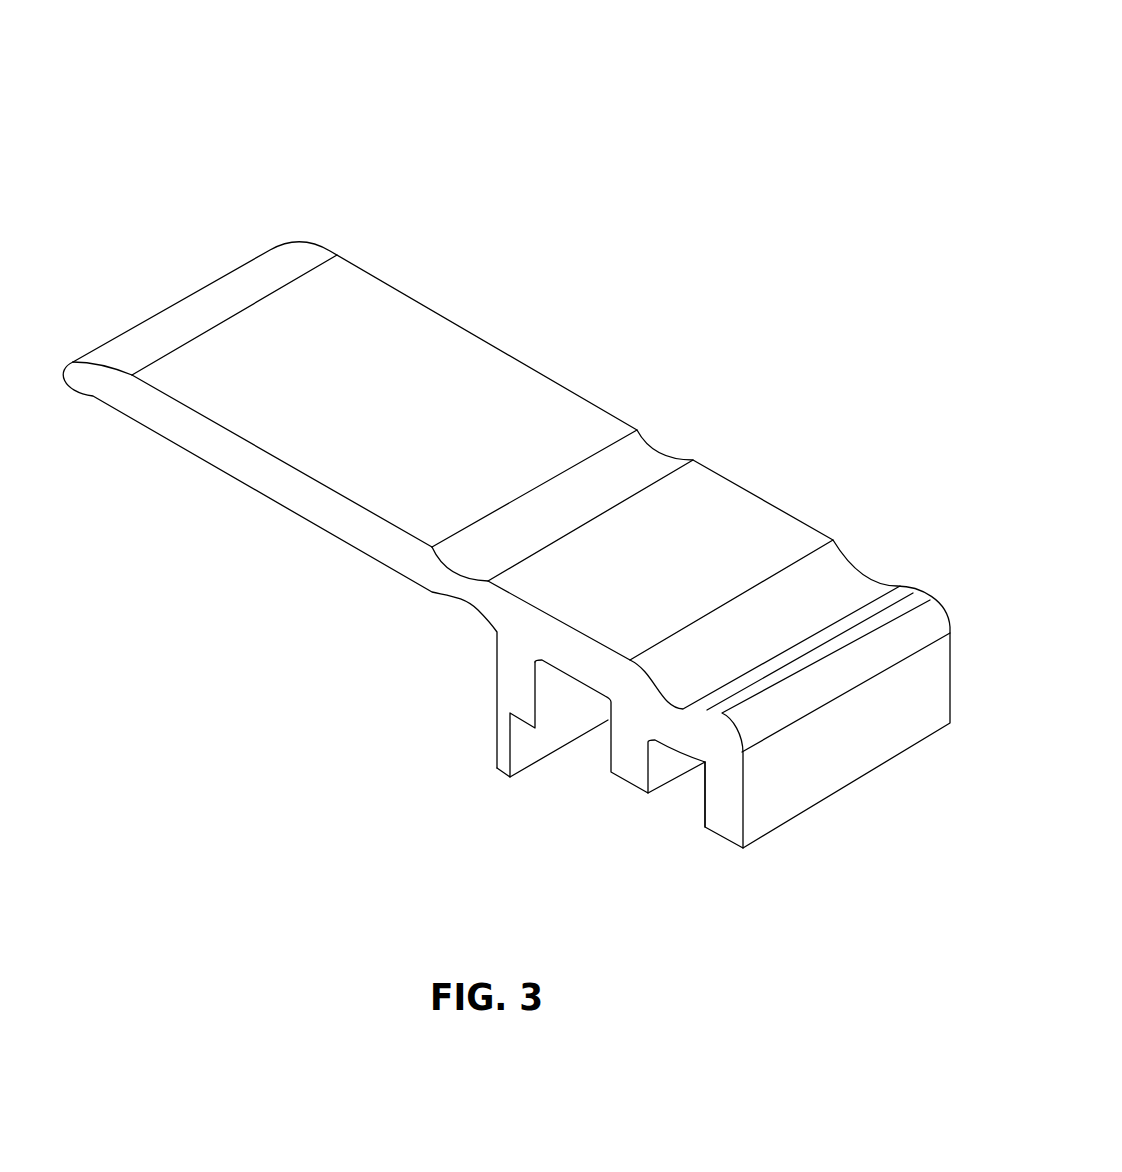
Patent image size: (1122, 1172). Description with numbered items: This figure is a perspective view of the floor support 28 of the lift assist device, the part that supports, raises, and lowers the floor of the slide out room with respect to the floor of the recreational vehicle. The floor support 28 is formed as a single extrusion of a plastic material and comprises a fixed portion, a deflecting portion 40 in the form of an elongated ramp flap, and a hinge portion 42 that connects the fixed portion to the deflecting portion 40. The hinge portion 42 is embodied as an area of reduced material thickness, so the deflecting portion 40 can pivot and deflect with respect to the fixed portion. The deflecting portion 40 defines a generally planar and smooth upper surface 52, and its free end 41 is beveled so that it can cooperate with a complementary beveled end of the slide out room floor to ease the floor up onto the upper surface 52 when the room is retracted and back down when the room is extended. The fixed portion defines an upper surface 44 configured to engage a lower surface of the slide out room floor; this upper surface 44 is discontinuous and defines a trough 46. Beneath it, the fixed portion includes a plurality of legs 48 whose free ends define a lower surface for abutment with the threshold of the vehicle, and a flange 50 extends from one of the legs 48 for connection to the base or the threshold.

The floor support 28 is at (818, 122).
The deflecting portion 40 is at (395, 340).
The free end 41 is at (230, 295).
The hinge portion 42 is at (633, 470).
The upper surface 44 is at (662, 580).
The trough 46 is at (895, 552).
The legs 48 is at (558, 690).
The flange 50 is at (490, 752).
The upper surface 52 is at (432, 437).